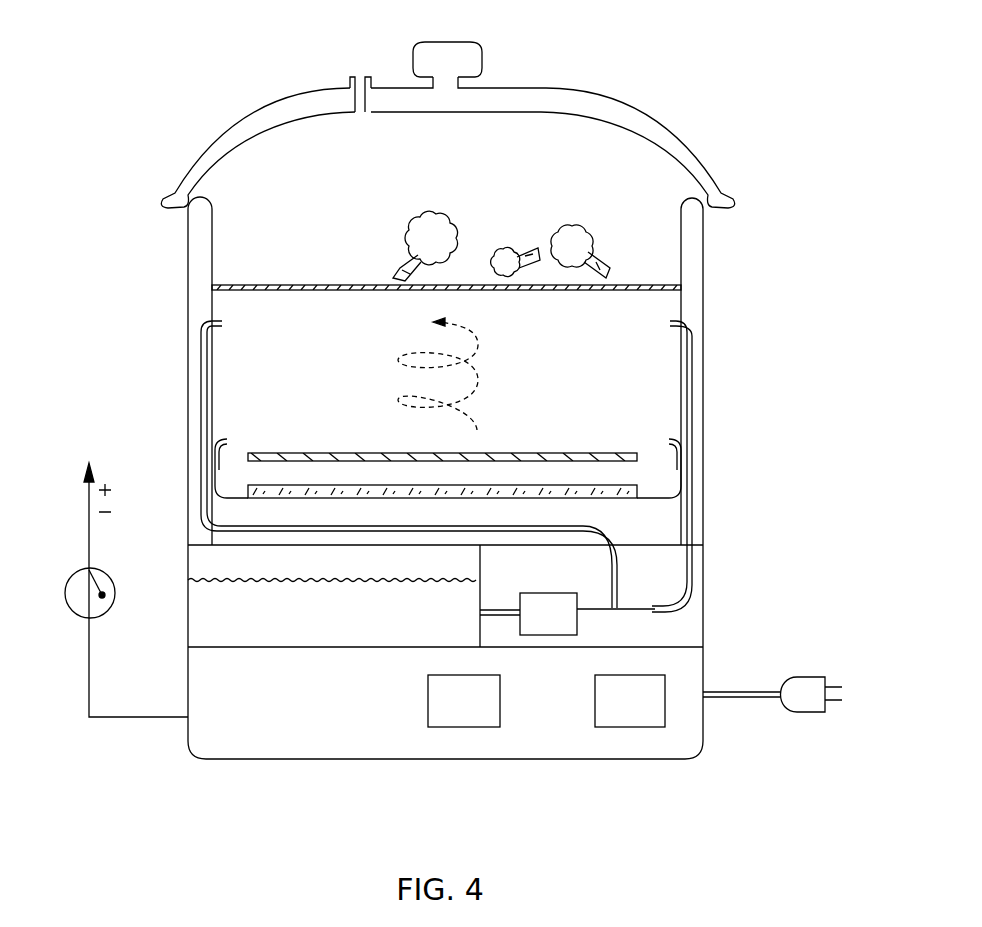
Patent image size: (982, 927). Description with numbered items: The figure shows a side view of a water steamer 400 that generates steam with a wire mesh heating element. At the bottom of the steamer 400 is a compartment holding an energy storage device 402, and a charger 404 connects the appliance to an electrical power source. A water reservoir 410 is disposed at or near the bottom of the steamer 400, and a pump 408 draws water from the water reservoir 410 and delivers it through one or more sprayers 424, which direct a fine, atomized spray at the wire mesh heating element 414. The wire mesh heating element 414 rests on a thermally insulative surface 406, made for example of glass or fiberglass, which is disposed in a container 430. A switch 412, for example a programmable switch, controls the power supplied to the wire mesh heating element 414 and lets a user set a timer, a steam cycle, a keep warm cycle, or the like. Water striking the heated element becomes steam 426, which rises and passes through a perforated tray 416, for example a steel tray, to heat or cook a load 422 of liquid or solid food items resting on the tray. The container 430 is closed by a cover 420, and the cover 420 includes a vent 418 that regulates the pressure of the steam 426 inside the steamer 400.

The water steamer 400 is at (742, 120).
The energy storage device 402 is at (595, 710).
The charger 404 is at (748, 688).
The thermally insulative surface 406 is at (568, 485).
The pump 408 is at (553, 637).
The water reservoir 410 is at (208, 603).
The switch 412 is at (72, 610).
The wire mesh heating element 414 is at (305, 452).
The perforated tray 416 is at (255, 285).
The vent 418 is at (358, 72).
The cover 420 is at (626, 107).
The load 422 is at (562, 228).
The sprayer 424 is at (203, 331).
The steam 426 is at (480, 340).
The container 430 is at (681, 353).